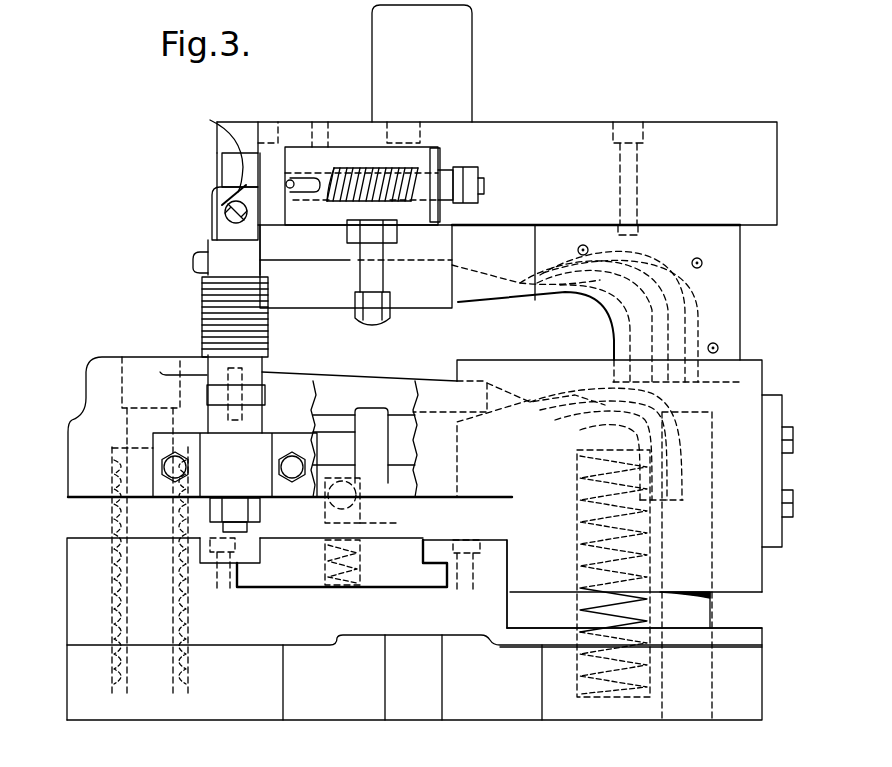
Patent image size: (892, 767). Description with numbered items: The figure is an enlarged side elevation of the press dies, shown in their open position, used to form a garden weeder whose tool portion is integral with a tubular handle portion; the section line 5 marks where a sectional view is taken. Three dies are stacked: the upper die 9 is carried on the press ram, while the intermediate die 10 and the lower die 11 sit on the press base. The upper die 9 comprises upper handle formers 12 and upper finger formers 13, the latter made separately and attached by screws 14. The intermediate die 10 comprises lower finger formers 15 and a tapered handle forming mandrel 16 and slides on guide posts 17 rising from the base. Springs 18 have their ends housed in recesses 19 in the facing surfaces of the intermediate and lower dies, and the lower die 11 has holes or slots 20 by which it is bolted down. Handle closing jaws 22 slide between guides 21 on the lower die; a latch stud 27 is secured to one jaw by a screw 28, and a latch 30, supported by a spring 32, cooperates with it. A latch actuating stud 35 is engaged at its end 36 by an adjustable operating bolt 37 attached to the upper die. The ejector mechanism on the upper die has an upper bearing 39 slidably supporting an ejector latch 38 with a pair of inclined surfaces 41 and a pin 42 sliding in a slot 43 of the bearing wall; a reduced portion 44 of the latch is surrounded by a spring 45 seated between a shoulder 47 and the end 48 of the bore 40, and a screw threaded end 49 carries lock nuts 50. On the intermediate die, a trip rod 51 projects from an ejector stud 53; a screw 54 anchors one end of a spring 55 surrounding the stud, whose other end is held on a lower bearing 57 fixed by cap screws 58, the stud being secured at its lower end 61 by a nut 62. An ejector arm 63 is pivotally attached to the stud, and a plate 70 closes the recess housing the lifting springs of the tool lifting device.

The section line 5 is at (110, 317).
The upper die 9 is at (713, 130).
The intermediate die 10 is at (745, 573).
The lower die 11 is at (745, 668).
The upper handle formers 12 is at (420, 300).
The upper finger formers 13 is at (620, 318).
The screws 14 is at (633, 132).
The lower finger formers 15 is at (567, 377).
The handle forming mandrel 16 is at (342, 382).
The guide posts 17 is at (142, 372).
The springs 18 is at (110, 580).
The recesses 19 is at (112, 452).
The holes or slots 20 is at (403, 700).
The guides 21 is at (208, 560).
The handle closing jaws 22 is at (280, 578).
The latch stud 27 is at (360, 513).
The screw 28 is at (723, 272).
The latch 30 is at (390, 521).
The spring 32 is at (328, 584).
The latch actuating stud 35 is at (368, 415).
The end of latch actuating stud 36 is at (376, 323).
The adjustable operating bolt 37 is at (360, 272).
The ejector latch 38 is at (230, 162).
The upper bearing 39 is at (345, 147).
The bore 40 is at (322, 203).
The inclined surfaces 41 is at (217, 123).
The pin 42 is at (290, 180).
The slot 43 is at (307, 190).
The reduced portion 44 is at (388, 203).
The spring 45 is at (362, 165).
The shoulder 47 is at (345, 160).
The end of bore 48 is at (430, 163).
The screw threaded end 49 is at (480, 184).
The lock nuts 50 is at (462, 170).
The trip rod 51 is at (225, 215).
The ejector stud 53 is at (217, 236).
The screw 54 is at (197, 264).
The spring 55 is at (203, 297).
The lower bearing 57 is at (290, 440).
The cap screws 58 is at (288, 467).
The lower end 61 is at (237, 524).
The nut 62 is at (260, 512).
The ejector arm 63 is at (230, 410).
The plate 70 is at (772, 412).